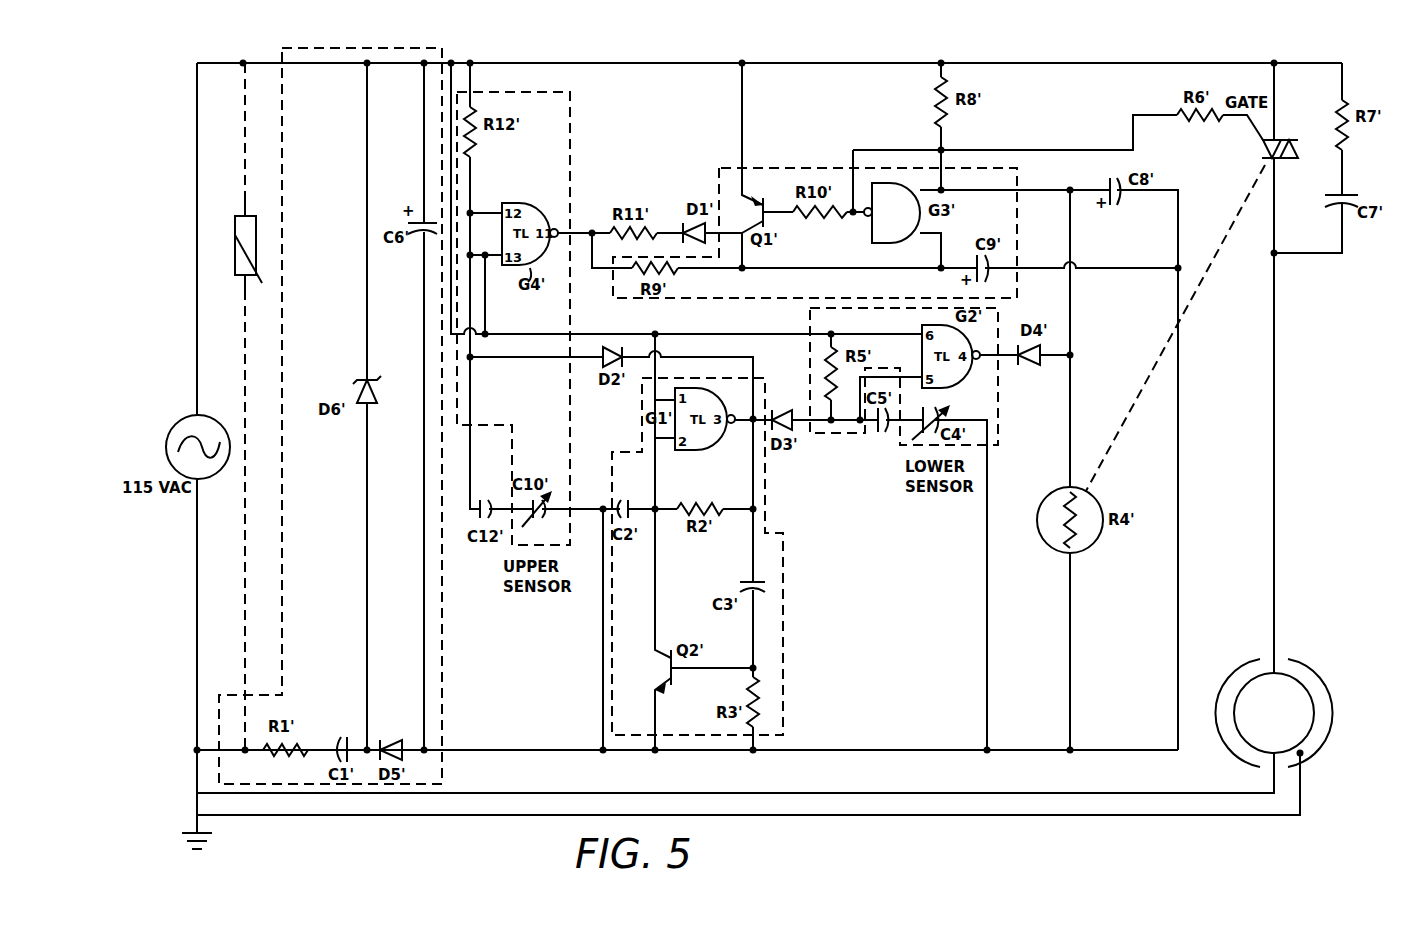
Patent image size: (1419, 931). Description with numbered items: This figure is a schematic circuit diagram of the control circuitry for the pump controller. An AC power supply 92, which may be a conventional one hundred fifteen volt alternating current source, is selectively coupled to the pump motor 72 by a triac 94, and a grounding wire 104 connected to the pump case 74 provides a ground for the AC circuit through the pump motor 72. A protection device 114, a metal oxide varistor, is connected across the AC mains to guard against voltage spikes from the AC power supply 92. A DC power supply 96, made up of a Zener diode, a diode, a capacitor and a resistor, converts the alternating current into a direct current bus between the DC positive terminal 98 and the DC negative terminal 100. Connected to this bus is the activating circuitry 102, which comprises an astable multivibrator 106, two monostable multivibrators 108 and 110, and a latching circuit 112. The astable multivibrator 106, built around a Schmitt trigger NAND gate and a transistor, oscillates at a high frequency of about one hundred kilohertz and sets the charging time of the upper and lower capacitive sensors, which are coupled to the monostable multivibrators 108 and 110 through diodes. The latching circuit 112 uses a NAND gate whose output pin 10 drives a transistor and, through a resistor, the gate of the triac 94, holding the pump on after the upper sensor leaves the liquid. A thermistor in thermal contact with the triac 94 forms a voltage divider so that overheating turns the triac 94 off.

The output pin of gate G3' 10 is at (880, 222).
The pump motor 72 is at (1278, 672).
The pump case 74 is at (1240, 668).
The AC power supply 92 is at (182, 425).
The TRIAC' 94 is at (1258, 165).
The DC power supply 96 is at (397, 49).
The DC positive terminal 98 is at (470, 63).
The DC negative terminal 100 is at (510, 749).
The activating circuitry 102 is at (858, 52).
The grounding wire 104 is at (1305, 786).
The astable multivibrator 106 is at (783, 645).
The monostable multivibrator 108 is at (571, 139).
The monostable multivibrator 110 is at (998, 391).
The latching circuit 112 is at (789, 168).
The protection device 114 is at (234, 260).